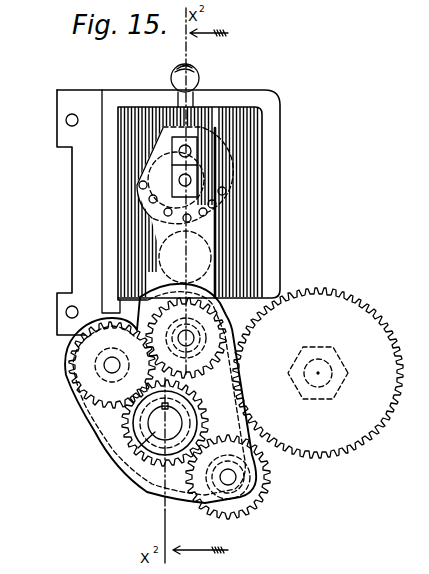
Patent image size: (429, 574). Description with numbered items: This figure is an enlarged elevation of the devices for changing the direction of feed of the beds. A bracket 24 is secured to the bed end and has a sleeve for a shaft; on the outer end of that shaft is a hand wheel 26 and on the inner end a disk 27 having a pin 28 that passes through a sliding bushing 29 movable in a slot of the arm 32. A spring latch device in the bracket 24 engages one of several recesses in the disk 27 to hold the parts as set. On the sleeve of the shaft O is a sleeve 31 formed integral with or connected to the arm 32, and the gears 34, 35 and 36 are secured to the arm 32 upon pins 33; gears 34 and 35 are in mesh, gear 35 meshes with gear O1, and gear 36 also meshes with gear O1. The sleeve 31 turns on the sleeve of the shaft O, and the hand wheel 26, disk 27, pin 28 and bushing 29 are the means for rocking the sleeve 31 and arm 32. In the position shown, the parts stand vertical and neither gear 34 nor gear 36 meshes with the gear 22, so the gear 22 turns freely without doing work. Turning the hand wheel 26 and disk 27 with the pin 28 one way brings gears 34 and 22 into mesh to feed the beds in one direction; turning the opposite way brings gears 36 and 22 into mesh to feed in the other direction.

The gear 22 is at (318, 373).
The bracket 24 is at (268, 187).
The hand wheel 26 is at (200, 84).
The disk 27 is at (227, 197).
The pin 28 is at (190, 152).
The sliding bushing 29 is at (193, 168).
The sleeve 31 is at (120, 430).
The arm 32 is at (197, 259).
The pins 33 is at (119, 369).
The gear 34 is at (226, 326).
The gear 35 is at (73, 369).
The gear 36 is at (265, 494).
The shaft O is at (155, 432).
The gear O1 is at (148, 466).